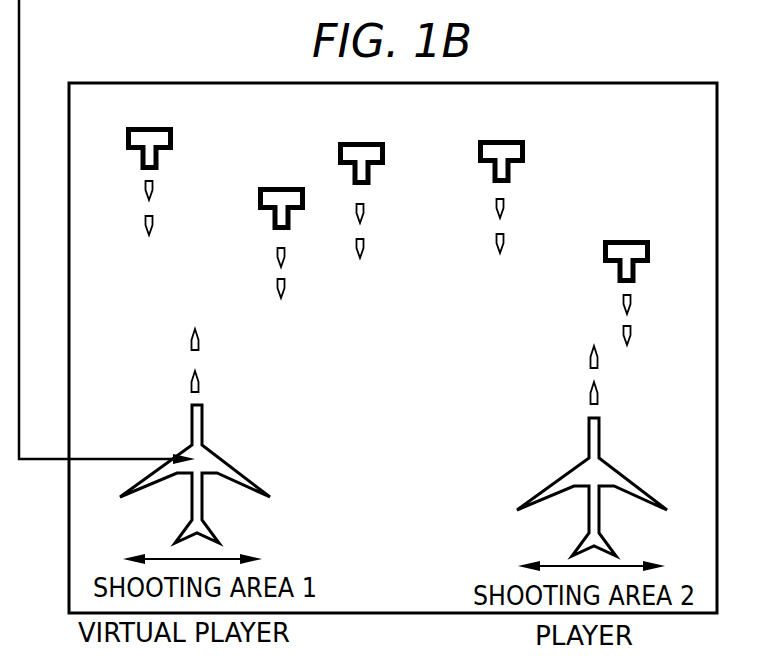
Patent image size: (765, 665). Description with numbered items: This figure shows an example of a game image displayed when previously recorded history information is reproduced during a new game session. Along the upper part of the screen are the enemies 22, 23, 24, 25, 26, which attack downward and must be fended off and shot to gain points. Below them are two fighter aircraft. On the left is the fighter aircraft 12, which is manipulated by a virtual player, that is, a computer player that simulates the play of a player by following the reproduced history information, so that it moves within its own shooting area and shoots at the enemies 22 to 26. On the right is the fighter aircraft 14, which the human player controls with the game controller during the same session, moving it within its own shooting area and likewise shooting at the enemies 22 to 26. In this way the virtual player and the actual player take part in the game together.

The fighter aircraft 12 is at (213, 467).
The fighter aircraft 14 is at (610, 475).
The enemy 22 is at (152, 140).
The enemy 23 is at (278, 198).
The enemy 24 is at (362, 152).
The enemy 25 is at (500, 150).
The enemy 26 is at (627, 255).